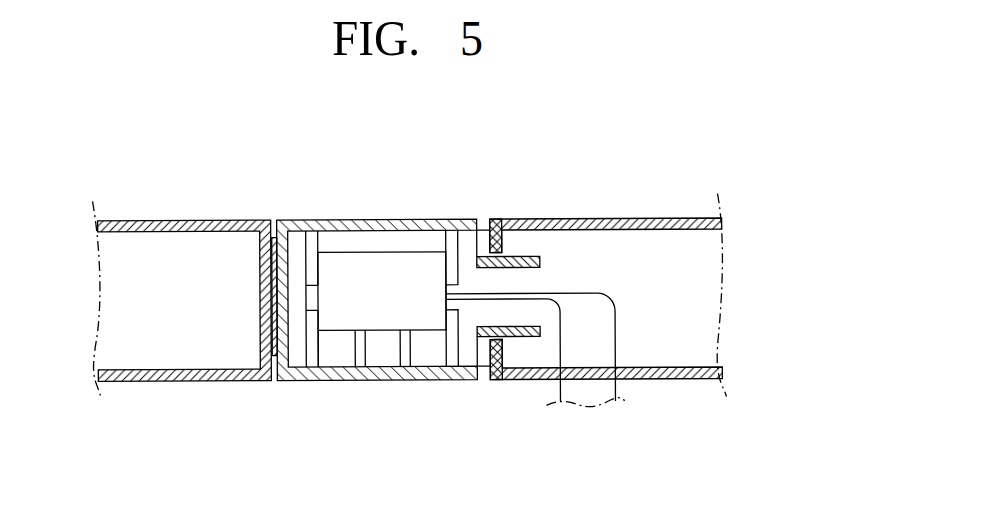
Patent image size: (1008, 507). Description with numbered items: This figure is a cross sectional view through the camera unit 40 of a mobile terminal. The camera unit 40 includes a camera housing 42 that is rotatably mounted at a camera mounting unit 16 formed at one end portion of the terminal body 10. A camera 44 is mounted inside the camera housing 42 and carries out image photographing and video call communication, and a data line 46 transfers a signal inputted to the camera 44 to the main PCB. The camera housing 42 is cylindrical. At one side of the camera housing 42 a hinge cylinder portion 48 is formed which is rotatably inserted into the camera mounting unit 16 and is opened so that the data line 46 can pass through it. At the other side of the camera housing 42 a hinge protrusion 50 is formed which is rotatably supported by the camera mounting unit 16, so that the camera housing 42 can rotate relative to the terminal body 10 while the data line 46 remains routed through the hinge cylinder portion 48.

The terminal body 10 is at (600, 219).
The camera mounting unit 16 is at (480, 219).
The camera unit 40 is at (377, 316).
The camera housing 42 is at (448, 381).
The camera 44 is at (355, 272).
The data line 46 is at (603, 398).
The hinge cylinder portion 48 is at (530, 259).
The hinge protrusion 50 is at (272, 381).